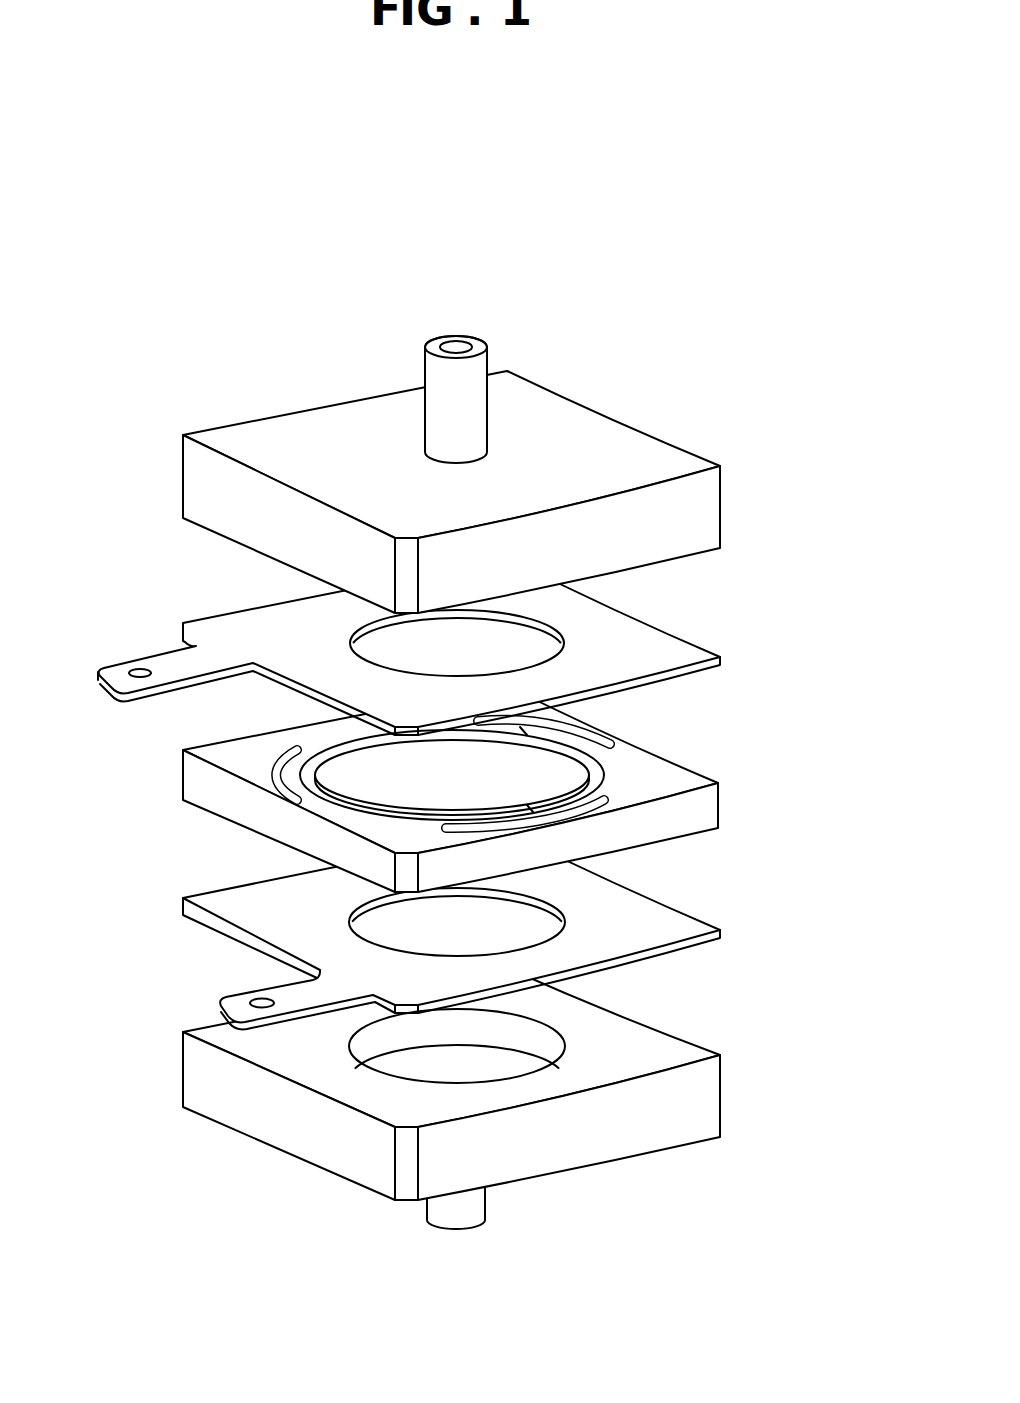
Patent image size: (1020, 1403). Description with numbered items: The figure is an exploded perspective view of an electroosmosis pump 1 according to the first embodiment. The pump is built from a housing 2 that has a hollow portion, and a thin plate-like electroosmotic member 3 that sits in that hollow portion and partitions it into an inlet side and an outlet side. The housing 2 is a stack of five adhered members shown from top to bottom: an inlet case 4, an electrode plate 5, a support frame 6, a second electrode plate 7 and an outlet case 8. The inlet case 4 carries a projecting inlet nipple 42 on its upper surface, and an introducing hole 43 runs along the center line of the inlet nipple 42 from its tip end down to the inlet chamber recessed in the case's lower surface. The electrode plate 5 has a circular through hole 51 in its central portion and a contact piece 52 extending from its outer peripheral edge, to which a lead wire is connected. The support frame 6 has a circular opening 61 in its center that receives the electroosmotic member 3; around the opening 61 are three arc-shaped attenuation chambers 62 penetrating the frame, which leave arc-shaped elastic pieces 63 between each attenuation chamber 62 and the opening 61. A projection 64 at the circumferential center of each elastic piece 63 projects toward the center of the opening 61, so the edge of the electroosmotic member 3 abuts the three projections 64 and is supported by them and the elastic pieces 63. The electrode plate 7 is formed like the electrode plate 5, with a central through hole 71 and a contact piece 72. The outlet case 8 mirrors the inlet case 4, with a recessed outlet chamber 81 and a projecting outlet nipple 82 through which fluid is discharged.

The electroosmosis pump 1 is at (463, 764).
The housing 2 is at (463, 781).
The electroosmotic member 3 is at (358, 790).
The inlet case 4 is at (483, 427).
The inlet nipple 42 is at (411, 352).
The introducing hole 43 is at (455, 344).
The electrode plate 5 is at (432, 645).
The through hole 51 is at (400, 653).
The contact piece 52 is at (177, 659).
The support frame 6 is at (442, 789).
The opening 61 is at (321, 743).
The attenuation chamber 62 is at (272, 755).
The elastic piece 63 is at (282, 788).
The projection 64 is at (312, 773).
The electrode plate 7 is at (457, 930).
The through hole 71 is at (383, 921).
The contact piece 72 is at (221, 1004).
The outlet case 8 is at (483, 1084).
The outlet chamber 81 is at (400, 1067).
The outlet nipple 82 is at (460, 1219).